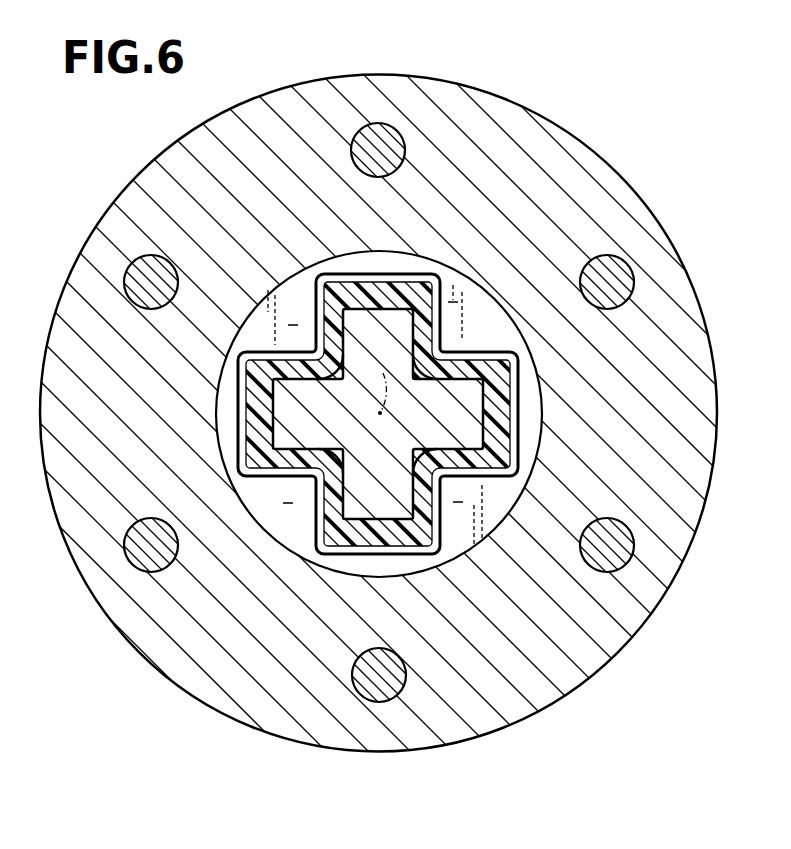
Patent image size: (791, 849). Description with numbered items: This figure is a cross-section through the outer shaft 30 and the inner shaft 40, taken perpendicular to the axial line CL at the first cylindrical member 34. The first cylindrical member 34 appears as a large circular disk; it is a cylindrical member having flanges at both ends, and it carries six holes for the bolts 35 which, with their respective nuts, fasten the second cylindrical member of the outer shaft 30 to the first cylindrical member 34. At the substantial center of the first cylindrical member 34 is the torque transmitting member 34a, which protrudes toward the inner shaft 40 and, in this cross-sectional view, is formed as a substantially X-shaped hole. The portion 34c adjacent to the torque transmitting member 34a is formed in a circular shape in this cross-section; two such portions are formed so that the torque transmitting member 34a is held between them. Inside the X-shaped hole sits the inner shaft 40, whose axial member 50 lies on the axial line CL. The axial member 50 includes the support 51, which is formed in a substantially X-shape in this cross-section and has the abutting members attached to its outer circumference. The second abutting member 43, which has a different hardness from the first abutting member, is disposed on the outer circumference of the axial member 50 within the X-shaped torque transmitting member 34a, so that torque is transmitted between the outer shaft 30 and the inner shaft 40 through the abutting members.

The outer shaft 30 is at (395, 404).
The first cylindrical member 34 is at (575, 137).
The torque transmitting member 34a is at (293, 325).
The portion adjacent to the torque transmitting member 34c is at (502, 340).
The bolts 35 is at (380, 148).
The second abutting member 43 is at (518, 388).
The axial member 50 is at (424, 415).
The inner shaft 40 is at (392, 415).
The support 51 is at (310, 414).